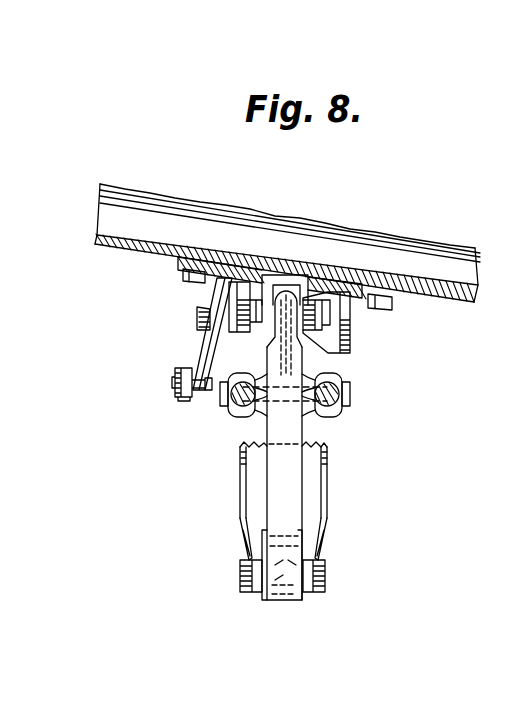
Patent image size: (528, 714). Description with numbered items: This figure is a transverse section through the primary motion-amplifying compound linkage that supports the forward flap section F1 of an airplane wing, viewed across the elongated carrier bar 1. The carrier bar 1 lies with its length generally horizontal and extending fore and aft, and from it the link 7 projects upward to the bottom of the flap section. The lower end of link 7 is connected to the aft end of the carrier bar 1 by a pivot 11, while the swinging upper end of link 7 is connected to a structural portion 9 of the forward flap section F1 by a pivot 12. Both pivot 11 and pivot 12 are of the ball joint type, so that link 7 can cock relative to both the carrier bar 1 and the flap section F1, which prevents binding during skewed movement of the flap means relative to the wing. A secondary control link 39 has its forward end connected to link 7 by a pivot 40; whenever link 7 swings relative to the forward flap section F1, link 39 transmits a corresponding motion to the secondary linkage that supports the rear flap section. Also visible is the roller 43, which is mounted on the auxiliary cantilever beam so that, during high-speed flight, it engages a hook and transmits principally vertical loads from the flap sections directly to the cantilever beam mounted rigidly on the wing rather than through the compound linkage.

The forward flap section F1 is at (404, 286).
The structural portion of the forward flap section 9 is at (215, 285).
The pivot 12 is at (287, 299).
The roller 43 is at (176, 400).
The pivot 40 is at (347, 394).
The secondary control link 39 is at (330, 417).
The link 7 is at (278, 473).
The carrier bar 1 is at (318, 490).
The pivot 11 is at (287, 577).